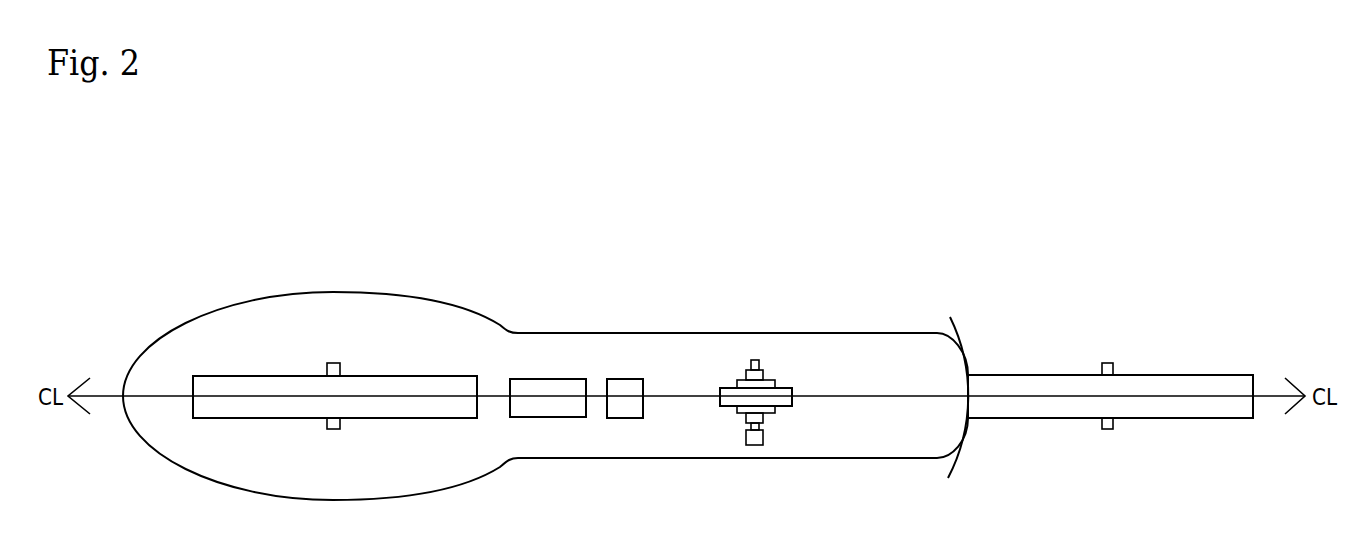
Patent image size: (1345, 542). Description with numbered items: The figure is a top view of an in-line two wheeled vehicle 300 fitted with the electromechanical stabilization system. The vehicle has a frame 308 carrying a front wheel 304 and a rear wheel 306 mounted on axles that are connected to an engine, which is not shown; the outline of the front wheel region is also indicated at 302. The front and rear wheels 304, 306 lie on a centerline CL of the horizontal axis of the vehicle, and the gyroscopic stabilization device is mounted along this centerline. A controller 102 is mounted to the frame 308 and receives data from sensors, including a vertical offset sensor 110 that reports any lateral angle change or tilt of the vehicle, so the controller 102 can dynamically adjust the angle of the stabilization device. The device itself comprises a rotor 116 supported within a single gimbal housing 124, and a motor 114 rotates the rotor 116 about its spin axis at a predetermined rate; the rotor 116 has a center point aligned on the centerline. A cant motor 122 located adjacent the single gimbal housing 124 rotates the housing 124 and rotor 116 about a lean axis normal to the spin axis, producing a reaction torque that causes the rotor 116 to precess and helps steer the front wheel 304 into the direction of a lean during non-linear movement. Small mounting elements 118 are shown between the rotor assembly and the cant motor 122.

The sensor probe assembly 300 is at (575, 227).
The end cap boundary 302 is at (960, 330).
The front wheel 304 is at (1052, 382).
The rear wheel 306 is at (448, 387).
The frame 308 is at (682, 333).
The controller 102 is at (593, 365).
The vertical offset sensor 110 is at (620, 386).
The motor 114 is at (773, 380).
The rotor 116 is at (722, 389).
The spacers 118 is at (747, 372).
The cant motor 122 is at (763, 443).
The single gimbal housing 124 is at (758, 362).